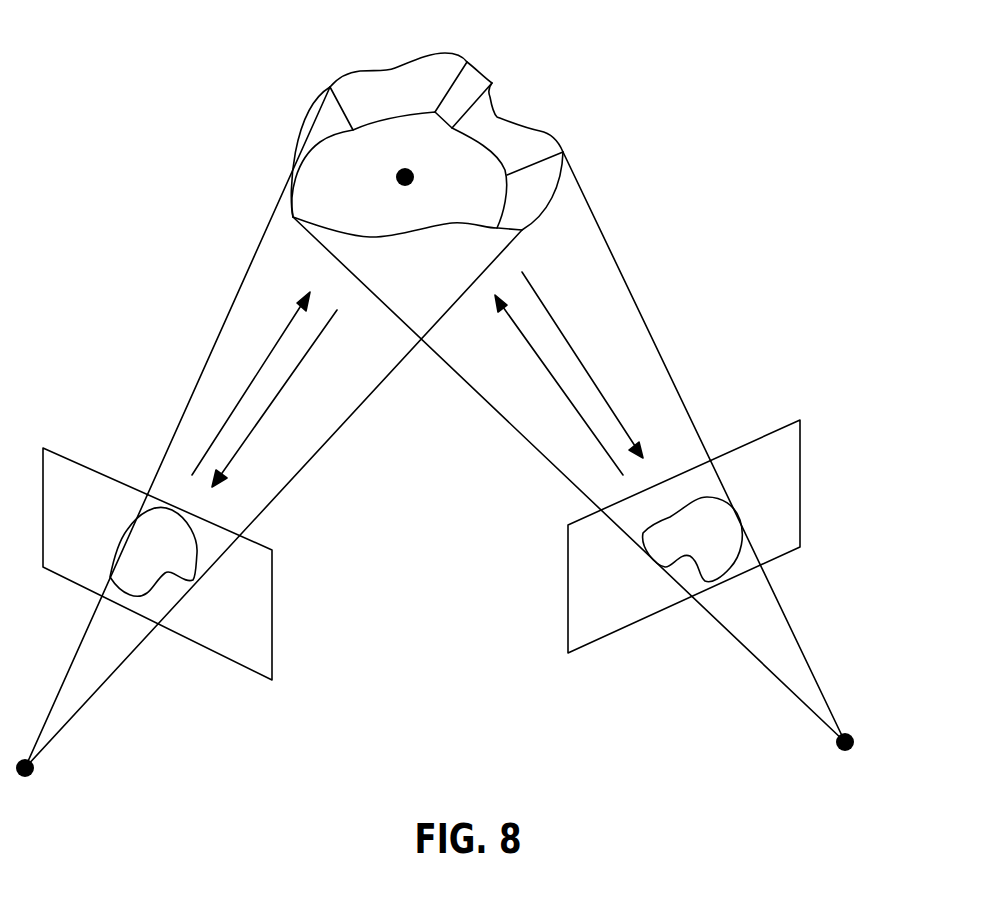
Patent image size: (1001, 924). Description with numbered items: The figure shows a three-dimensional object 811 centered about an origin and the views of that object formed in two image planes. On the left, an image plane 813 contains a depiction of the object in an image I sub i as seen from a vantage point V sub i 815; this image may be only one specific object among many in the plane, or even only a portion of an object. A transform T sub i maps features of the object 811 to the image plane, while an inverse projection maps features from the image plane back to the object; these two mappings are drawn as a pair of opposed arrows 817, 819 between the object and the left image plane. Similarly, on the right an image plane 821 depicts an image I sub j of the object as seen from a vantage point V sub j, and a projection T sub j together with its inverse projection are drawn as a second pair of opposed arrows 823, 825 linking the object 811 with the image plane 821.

The three-dimensional object 811 is at (427, 132).
The image plane 813 is at (33, 768).
The vantage point V_i 815 is at (273, 650).
The transformation Ti 817 is at (270, 405).
The inverse transformation Ti^-1 819 is at (237, 405).
The image plane 821 is at (802, 522).
The transformation Tj 823 is at (607, 398).
The inverse transformation Tj^-1 825 is at (560, 393).